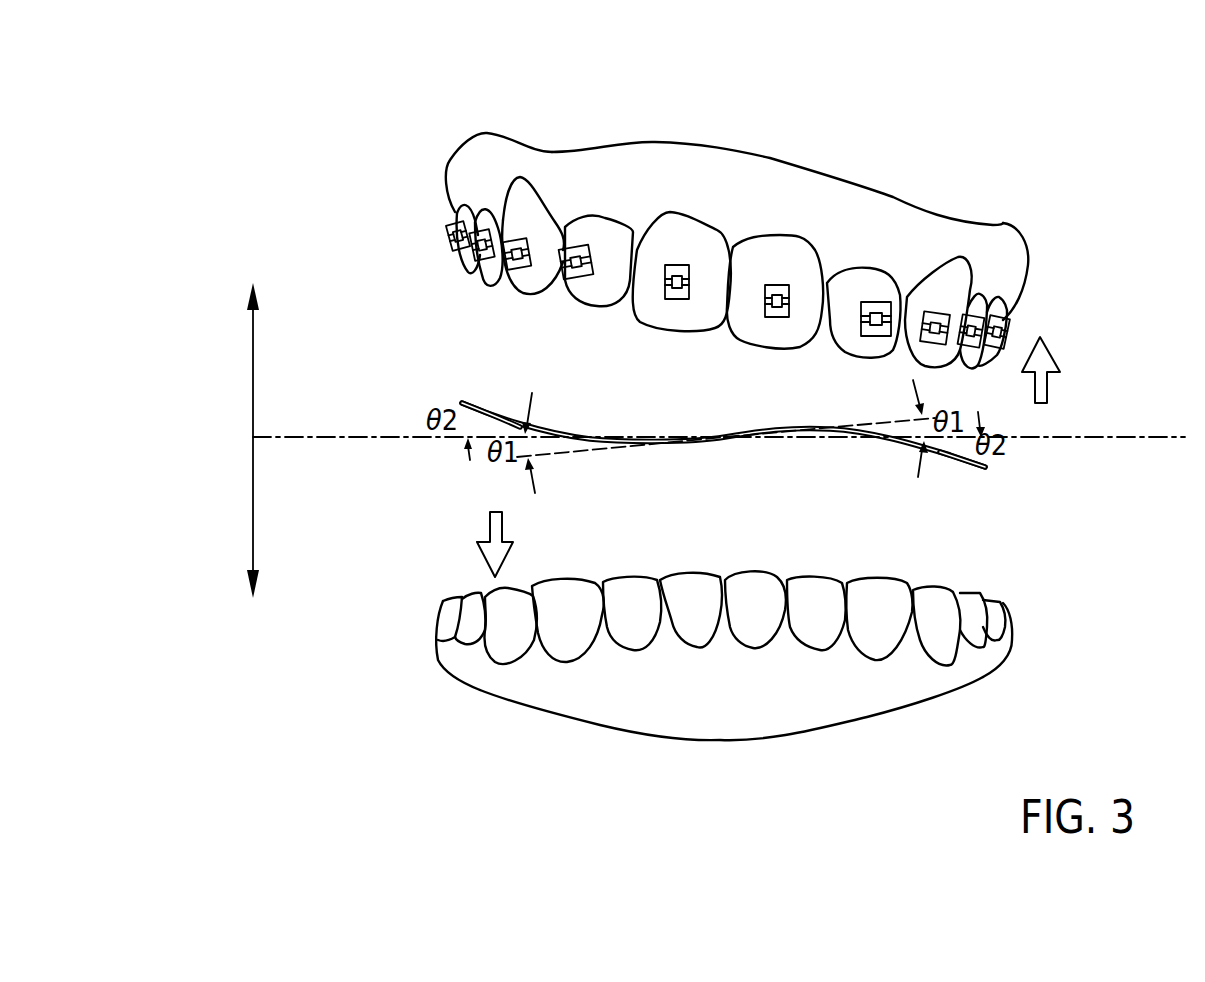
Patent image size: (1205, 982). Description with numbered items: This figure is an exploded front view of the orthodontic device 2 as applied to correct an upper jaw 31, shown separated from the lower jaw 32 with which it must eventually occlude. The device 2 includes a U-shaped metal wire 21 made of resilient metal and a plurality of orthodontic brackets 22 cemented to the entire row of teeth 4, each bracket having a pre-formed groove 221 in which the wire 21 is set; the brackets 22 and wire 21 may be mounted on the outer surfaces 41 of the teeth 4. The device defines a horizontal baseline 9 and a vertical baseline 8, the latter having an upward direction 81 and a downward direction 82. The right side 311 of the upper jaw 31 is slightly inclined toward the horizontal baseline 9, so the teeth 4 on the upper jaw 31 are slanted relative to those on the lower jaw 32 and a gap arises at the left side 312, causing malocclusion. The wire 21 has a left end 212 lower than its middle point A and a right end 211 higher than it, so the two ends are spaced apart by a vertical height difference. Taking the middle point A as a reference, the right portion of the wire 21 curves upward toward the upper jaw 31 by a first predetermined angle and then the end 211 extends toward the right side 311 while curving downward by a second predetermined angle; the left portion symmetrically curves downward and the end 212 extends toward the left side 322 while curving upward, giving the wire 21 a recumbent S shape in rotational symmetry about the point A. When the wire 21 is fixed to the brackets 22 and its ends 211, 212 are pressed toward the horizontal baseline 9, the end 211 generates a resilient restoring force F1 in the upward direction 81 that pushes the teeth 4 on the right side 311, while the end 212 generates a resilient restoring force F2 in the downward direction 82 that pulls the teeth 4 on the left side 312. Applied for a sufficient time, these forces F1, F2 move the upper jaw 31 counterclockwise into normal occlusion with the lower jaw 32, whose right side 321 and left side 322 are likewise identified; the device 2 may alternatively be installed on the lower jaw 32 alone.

The orthodontic device 2 is at (490, 484).
The U-shaped metal wire 21 is at (746, 440).
The right end 211 is at (963, 485).
The left end 212 is at (494, 403).
The orthodontic brackets 22 is at (728, 306).
The groove 221 is at (565, 272).
The upper jaw 31 is at (745, 189).
The right side of the upper jaw 311 is at (1010, 252).
The left side of the upper jaw 312 is at (477, 155).
The lower jaw 32 is at (731, 704).
The right side of the lower jaw 321 is at (997, 658).
The left side of the lower jaw 322 is at (446, 658).
The teeth 4 is at (722, 453).
The outer surface 41 is at (800, 260).
The vertical baseline 8 is at (291, 447).
The upward direction 81 is at (258, 296).
The downward direction 82 is at (258, 573).
The horizontal baseline 9 is at (1184, 437).
The middle point A is at (725, 438).
The resilient restoring force F1 is at (1052, 371).
The resilient restoring force F2 is at (510, 544).